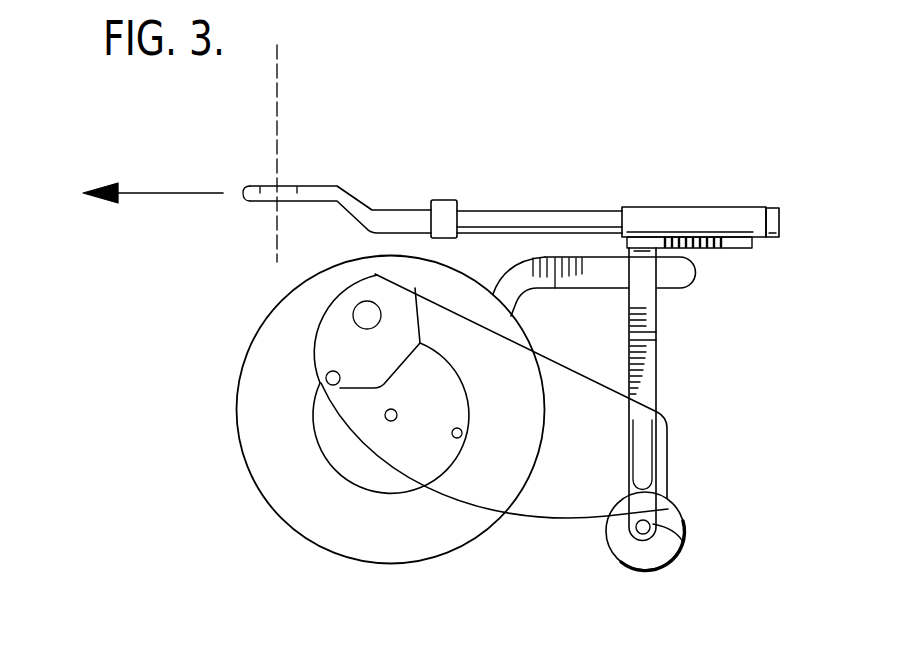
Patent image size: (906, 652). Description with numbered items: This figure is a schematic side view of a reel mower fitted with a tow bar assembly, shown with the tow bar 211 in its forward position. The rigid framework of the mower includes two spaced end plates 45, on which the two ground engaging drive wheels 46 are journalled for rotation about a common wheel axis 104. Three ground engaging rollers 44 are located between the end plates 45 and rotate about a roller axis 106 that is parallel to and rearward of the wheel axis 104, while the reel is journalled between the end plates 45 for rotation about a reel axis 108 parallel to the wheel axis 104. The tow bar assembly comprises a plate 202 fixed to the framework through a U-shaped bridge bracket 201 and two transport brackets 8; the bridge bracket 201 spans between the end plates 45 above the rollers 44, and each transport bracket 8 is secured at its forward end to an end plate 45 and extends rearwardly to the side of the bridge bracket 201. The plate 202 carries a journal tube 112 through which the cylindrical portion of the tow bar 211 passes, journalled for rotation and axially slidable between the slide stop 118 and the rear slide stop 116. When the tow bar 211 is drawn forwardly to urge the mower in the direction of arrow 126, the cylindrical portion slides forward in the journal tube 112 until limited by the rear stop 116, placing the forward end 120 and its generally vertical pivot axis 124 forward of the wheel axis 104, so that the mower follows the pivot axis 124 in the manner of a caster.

The transport bracket 8 is at (587, 280).
The ground engaging roller 44 is at (681, 514).
The end plate 45 is at (563, 513).
The ground engaging drive wheel 46 is at (260, 453).
The wheel axis 104 is at (389, 421).
The roller axis 106 is at (690, 550).
The reel axis 108 is at (457, 438).
The journal tube 112 is at (718, 210).
The rear slide stop 116 is at (772, 208).
The slide stop 118 is at (447, 200).
The forward end 120 is at (250, 203).
The pivot axis 124 is at (277, 60).
The arrow 126 is at (168, 193).
The bridge bracket 201 is at (657, 353).
The plate 202 is at (733, 249).
The tow bar 211 is at (407, 180).